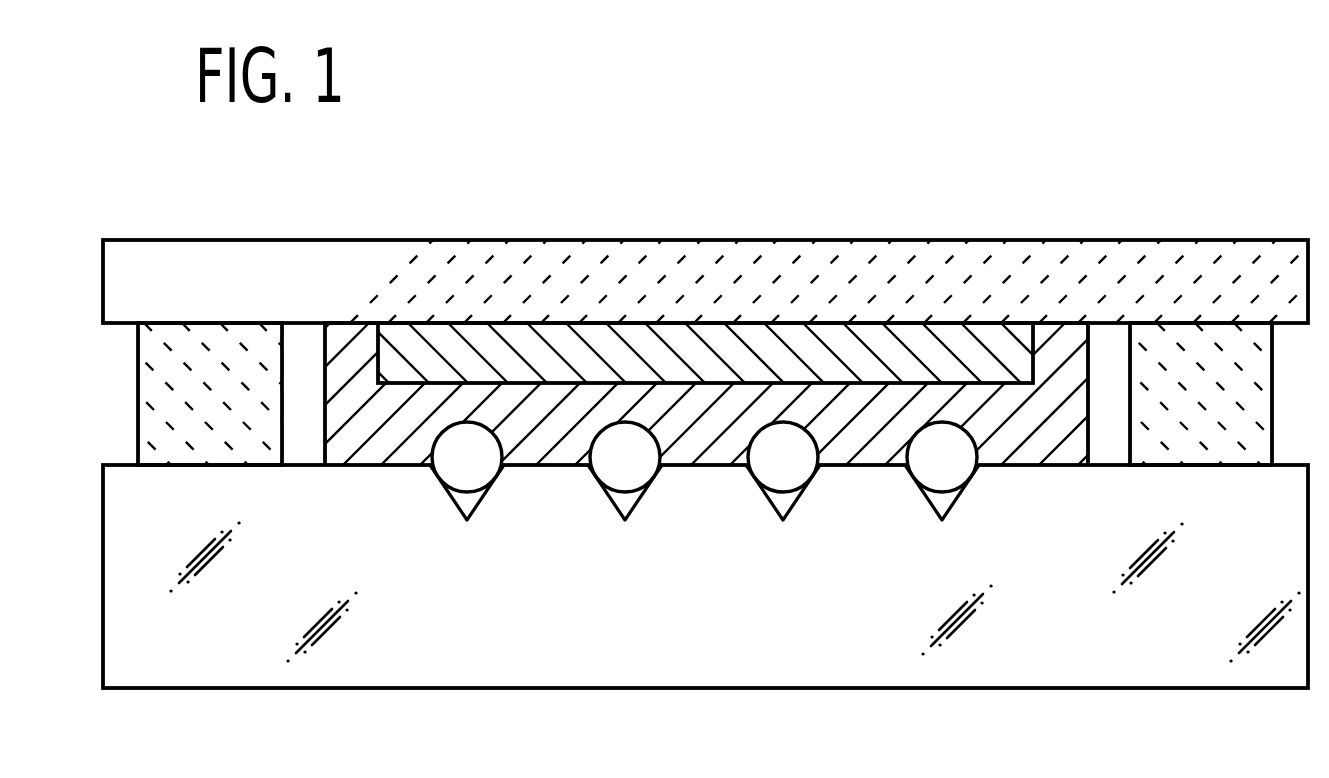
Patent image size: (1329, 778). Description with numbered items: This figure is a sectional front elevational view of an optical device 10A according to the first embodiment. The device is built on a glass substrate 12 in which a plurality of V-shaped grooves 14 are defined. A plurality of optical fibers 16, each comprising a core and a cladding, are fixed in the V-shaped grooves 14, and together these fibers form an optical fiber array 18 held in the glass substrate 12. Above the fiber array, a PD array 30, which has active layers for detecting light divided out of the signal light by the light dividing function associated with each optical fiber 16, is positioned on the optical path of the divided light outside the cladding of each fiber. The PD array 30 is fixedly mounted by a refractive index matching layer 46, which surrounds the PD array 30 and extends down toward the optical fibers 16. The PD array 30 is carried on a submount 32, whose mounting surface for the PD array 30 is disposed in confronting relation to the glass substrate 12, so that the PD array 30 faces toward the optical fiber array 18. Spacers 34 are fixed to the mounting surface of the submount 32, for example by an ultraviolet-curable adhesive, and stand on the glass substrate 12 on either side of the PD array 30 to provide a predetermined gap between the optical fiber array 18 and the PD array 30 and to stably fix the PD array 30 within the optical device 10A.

The optical device 10A is at (862, 166).
The glass substrate 12 is at (197, 668).
The V-shaped grooves 14 is at (478, 503).
The optical fibers 16 is at (466, 455).
The optical fiber array 18 is at (968, 563).
The PD array 30 is at (483, 353).
The submount 32 is at (308, 240).
The spacers 34 is at (163, 452).
The refractive index matching layer 46 is at (1043, 453).